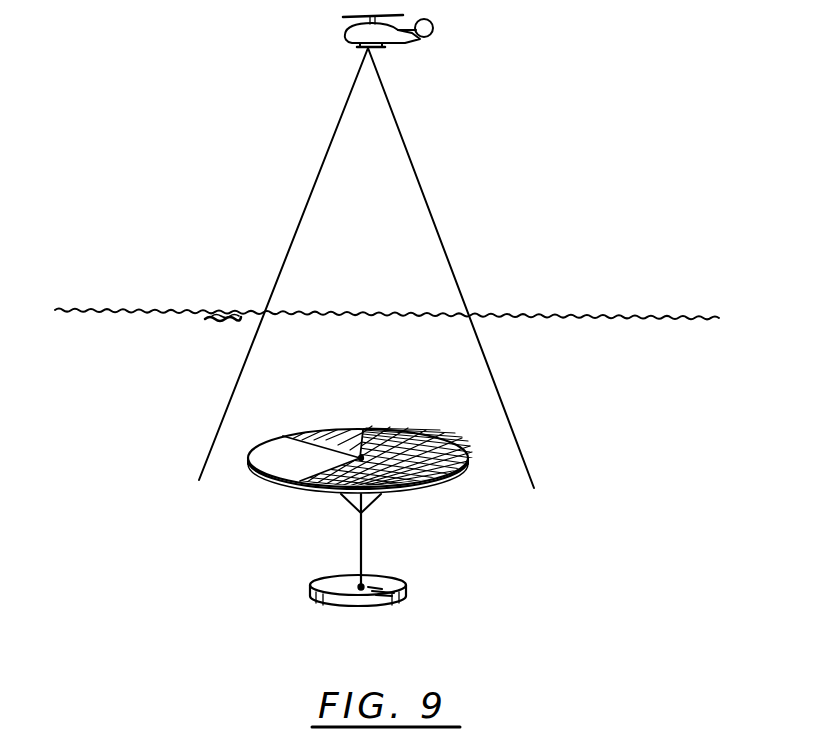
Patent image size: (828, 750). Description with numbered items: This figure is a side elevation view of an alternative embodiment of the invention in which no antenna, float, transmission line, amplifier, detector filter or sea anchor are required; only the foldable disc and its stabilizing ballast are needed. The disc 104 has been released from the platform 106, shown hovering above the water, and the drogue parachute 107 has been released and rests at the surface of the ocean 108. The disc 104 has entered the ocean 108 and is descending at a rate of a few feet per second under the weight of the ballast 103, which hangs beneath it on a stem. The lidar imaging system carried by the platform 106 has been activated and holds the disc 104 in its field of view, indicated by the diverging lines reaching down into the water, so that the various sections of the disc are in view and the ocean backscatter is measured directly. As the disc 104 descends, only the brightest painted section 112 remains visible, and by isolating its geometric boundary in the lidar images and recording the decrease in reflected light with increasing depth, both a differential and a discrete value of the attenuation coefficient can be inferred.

The platform 106 is at (378, 49).
The drogue parachute 107 is at (236, 312).
The ocean 108 is at (560, 318).
The disc 104 is at (400, 432).
The brightest painted section 112 is at (465, 450).
The ballast 103 is at (405, 580).